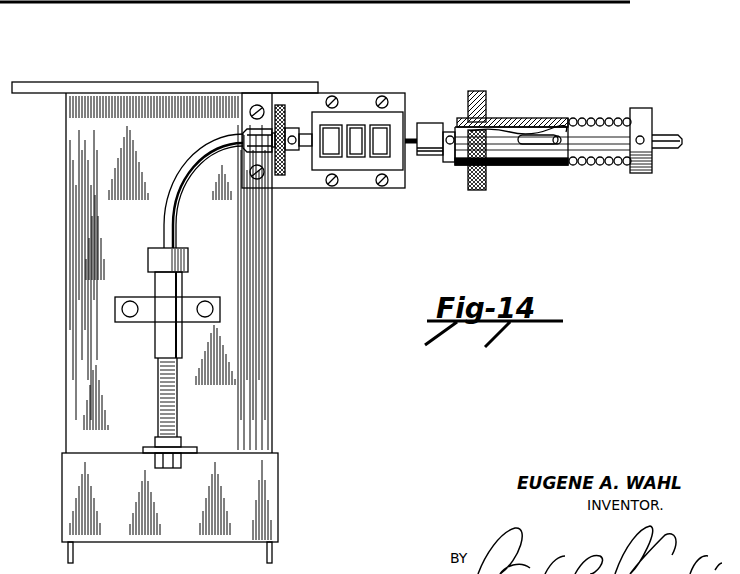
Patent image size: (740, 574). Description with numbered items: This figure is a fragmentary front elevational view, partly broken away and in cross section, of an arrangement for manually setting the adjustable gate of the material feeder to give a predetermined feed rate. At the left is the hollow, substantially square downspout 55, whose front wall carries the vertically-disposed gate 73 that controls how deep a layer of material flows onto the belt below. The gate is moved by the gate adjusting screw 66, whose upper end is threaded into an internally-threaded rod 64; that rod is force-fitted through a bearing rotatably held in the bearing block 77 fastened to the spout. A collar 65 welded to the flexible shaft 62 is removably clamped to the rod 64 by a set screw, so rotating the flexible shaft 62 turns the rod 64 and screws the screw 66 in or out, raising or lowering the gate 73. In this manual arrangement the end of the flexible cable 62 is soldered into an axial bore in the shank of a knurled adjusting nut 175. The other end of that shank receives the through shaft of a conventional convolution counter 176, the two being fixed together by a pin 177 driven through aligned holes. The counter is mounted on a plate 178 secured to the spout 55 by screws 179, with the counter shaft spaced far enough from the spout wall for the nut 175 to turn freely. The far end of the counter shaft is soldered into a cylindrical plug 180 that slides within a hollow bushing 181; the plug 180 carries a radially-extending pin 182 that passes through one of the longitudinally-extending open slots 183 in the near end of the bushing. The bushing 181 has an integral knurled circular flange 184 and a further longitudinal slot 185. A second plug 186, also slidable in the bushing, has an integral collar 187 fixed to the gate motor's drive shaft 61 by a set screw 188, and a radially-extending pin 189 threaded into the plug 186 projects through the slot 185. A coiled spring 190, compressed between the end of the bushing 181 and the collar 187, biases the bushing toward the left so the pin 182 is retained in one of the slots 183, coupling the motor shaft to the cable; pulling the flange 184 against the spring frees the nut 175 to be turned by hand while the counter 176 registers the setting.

The downspout 55 is at (275, 318).
The drive shaft 61 is at (668, 150).
The flexible shaft 62 is at (200, 147).
The internally-threaded rod 64 is at (155, 283).
The collar 65 is at (148, 250).
The gate adjusting screw 66 is at (157, 395).
The gate 73 is at (122, 458).
The bearing block 77 is at (140, 323).
The adjusting nut 175 is at (280, 105).
The convolution counter 176 is at (362, 162).
The pin 177 is at (297, 130).
The plate 178 is at (295, 103).
The screws 179 is at (257, 105).
The cylindrical plug 180 is at (430, 123).
The hollow bushing 181 is at (509, 113).
The radially-extending pin 182 is at (455, 175).
The longitudinally-extending open slots 183 is at (445, 165).
The circular flange 184 is at (477, 90).
The longitudinal slot 185 is at (535, 144).
The plug 186 is at (540, 130).
The collar 187 is at (642, 110).
The set screw 188 is at (640, 145).
The radially-extending pin 189 is at (557, 145).
The coiled spring 190 is at (603, 120).